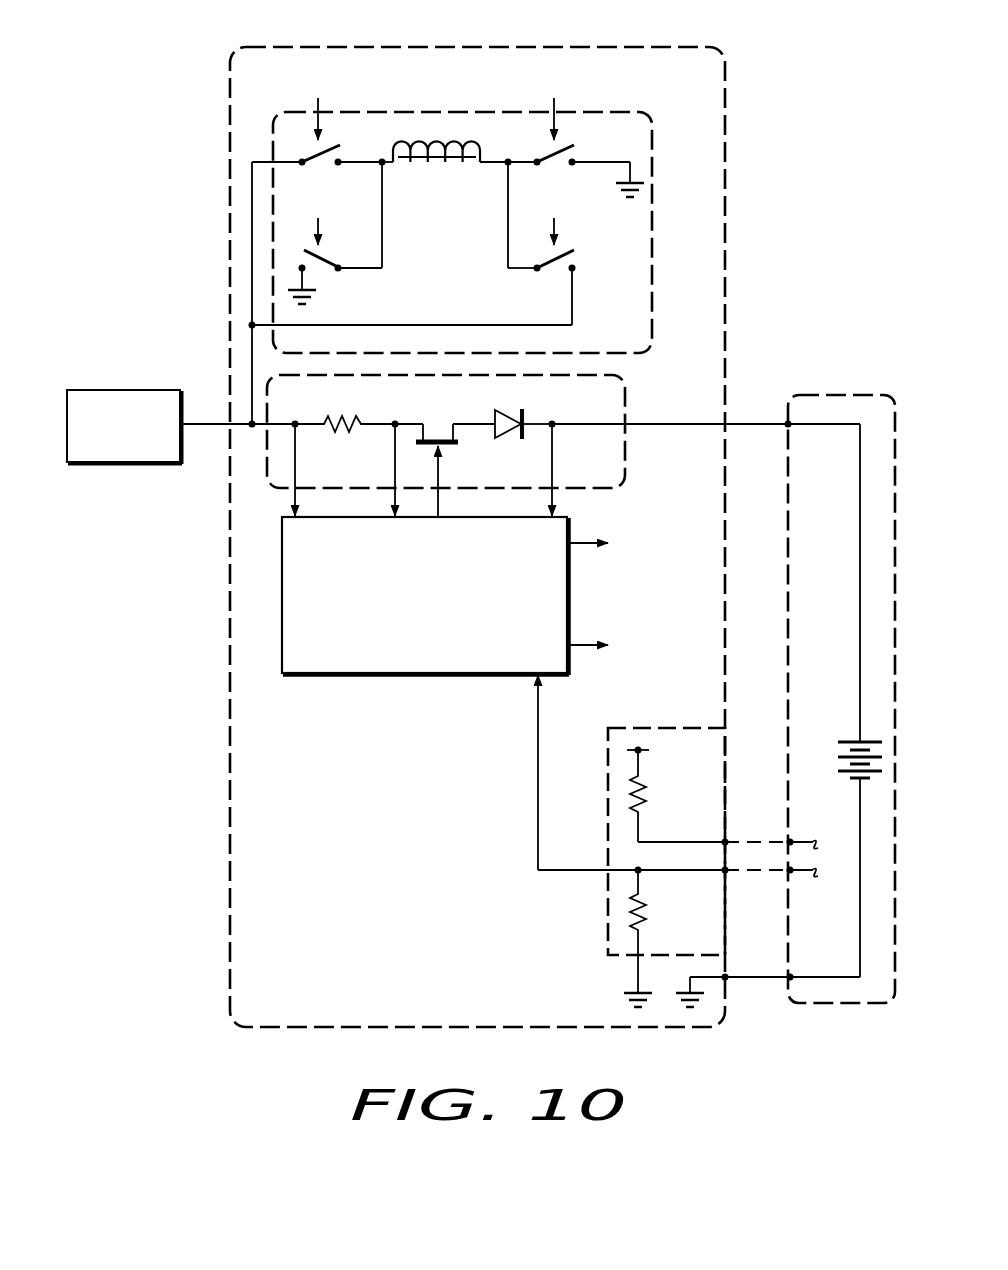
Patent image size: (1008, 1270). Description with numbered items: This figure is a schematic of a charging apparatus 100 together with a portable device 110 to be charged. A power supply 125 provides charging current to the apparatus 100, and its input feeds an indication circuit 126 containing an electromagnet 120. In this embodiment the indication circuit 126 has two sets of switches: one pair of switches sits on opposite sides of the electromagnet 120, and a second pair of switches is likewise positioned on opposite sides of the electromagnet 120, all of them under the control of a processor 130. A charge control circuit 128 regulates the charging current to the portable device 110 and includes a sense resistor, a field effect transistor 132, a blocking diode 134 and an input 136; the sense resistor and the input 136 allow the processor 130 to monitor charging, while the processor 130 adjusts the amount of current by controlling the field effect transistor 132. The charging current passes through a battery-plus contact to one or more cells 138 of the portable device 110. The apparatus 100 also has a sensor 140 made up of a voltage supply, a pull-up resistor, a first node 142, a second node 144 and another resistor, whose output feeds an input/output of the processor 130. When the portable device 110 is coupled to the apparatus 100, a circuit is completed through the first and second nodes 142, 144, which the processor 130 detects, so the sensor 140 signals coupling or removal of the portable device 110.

The apparatus 100 is at (228, 635).
The portable device 110 is at (832, 392).
The electromagnet 120 is at (440, 175).
The power supply 125 is at (125, 466).
The indication circuit 126 is at (630, 111).
The charge control circuit 128 is at (626, 450).
The processor 130 is at (425, 676).
The field effect transistor 132 is at (454, 448).
The blocking diode 134 is at (494, 411).
The input 136 is at (555, 452).
The cells 138 is at (846, 741).
The sensor 140 is at (606, 908).
The first node 142 is at (726, 841).
The second node 144 is at (727, 872).